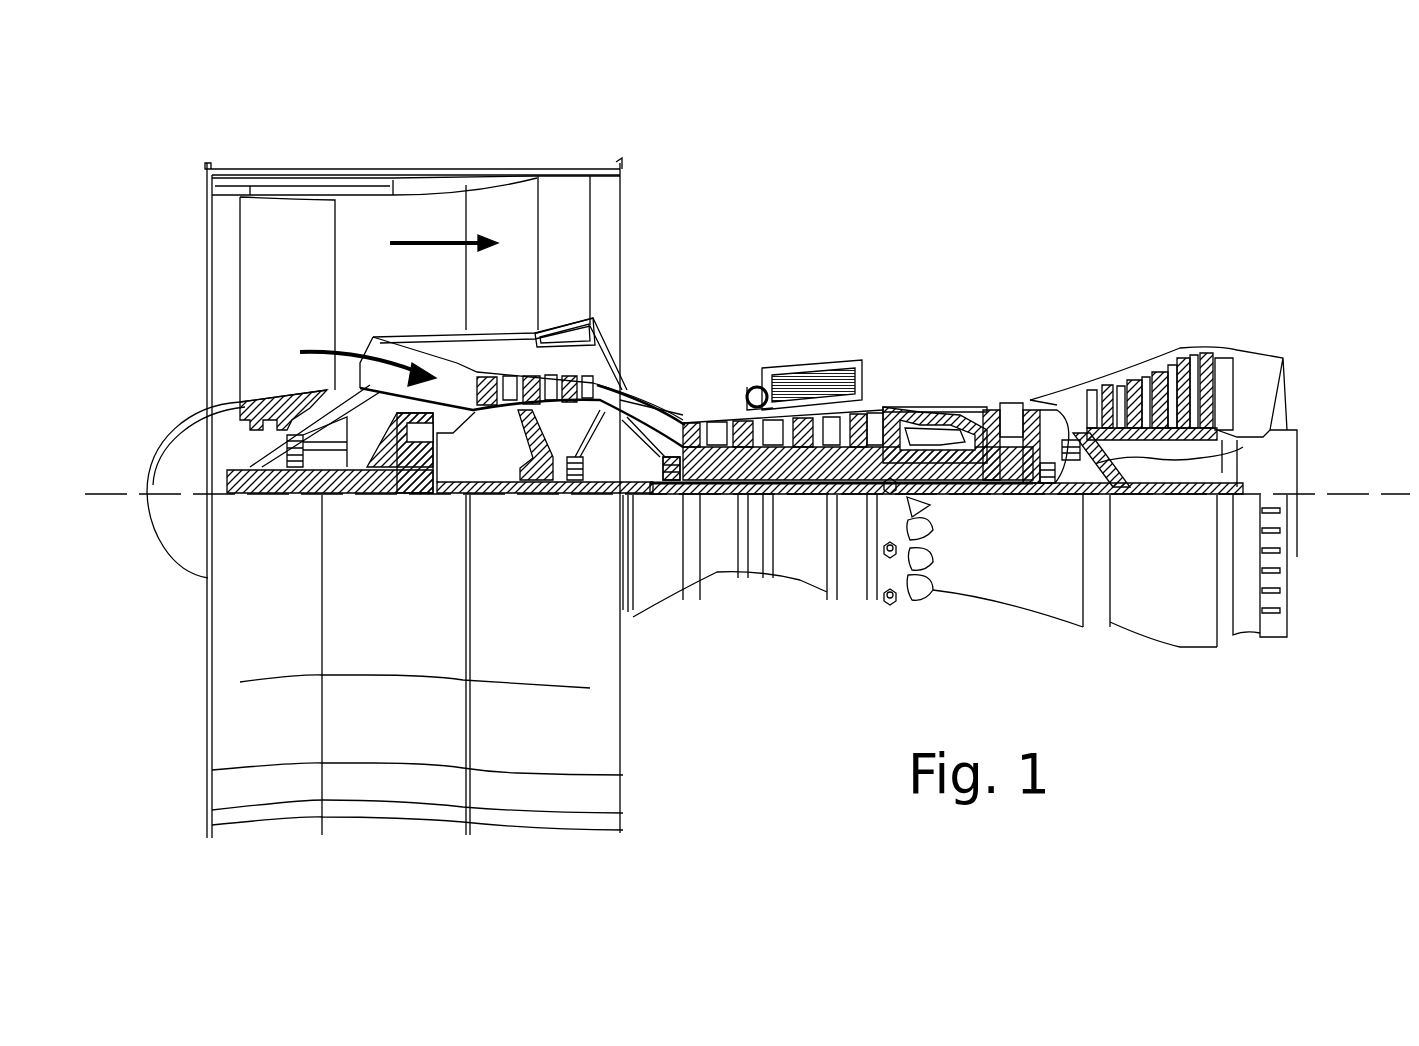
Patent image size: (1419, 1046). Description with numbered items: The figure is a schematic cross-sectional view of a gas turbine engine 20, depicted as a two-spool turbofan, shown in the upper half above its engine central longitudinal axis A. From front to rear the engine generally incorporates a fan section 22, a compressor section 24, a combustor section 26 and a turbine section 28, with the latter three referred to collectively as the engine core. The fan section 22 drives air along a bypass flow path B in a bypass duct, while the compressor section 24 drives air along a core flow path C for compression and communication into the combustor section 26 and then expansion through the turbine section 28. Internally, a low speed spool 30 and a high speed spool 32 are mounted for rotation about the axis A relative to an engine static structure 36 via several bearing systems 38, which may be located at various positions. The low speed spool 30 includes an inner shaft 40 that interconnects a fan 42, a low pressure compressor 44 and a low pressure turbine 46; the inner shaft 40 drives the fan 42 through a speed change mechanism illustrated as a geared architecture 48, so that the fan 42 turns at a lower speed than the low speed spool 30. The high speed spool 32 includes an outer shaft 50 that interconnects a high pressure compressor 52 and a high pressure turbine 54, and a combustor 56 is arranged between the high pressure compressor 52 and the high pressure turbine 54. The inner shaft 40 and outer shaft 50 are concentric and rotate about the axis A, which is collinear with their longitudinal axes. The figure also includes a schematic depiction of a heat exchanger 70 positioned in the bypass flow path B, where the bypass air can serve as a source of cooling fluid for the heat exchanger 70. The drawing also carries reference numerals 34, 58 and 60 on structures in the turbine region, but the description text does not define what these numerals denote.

The gas turbine engine 20 is at (1113, 176).
The fan section 22 is at (440, 137).
The compressor section 24 is at (905, 283).
The combustor section 26 is at (985, 283).
The turbine section 28 is at (1240, 283).
The low speed spool 30 is at (798, 505).
The high speed spool 32 is at (855, 455).
The turbine exhaust case 34 is at (1170, 462).
The engine static structure 36 is at (852, 600).
The bearing systems 38 is at (298, 470).
The inner shaft 40 is at (635, 500).
The fan 42 is at (302, 279).
The low pressure compressor 44 is at (548, 385).
The low pressure turbine 46 is at (1157, 375).
The geared architecture 48 is at (420, 470).
The outer shaft 50 is at (945, 480).
The high pressure compressor 52 is at (772, 455).
The high pressure turbine 54 is at (1013, 400).
The combustor 56 is at (942, 420).
The mid-turbine frame 58 is at (1060, 420).
The airfoils 60 is at (1090, 427).
The heat exchanger 70 is at (810, 362).
The engine central longitudinal axis A is at (1350, 492).
The bypass flow path B is at (404, 241).
The core flow path C is at (354, 361).